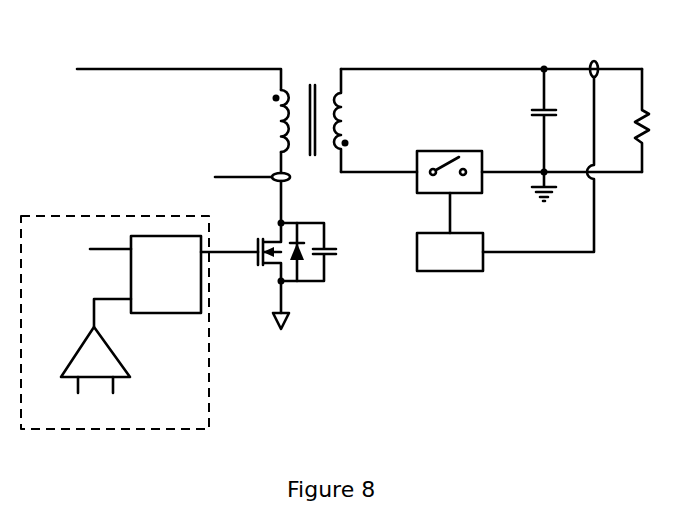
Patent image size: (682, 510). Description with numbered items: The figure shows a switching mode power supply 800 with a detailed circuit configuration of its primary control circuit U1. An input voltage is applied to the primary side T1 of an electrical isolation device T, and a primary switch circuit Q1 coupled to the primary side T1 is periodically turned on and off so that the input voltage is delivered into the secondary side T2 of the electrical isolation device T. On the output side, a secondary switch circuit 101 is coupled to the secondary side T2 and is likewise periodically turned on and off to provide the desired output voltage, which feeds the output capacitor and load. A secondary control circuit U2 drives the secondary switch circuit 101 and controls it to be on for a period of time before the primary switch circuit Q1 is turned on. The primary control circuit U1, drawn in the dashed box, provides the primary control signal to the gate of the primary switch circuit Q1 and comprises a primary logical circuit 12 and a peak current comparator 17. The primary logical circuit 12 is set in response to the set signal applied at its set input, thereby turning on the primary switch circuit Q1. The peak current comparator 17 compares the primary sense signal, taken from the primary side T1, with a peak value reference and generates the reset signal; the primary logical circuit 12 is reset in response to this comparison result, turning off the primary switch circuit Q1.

The switching mode power supply 800 is at (92, 51).
The primary logical circuit 12 is at (166, 276).
The peak current comparator 17 is at (95, 360).
The secondary switch circuit 101 is at (428, 175).
The electrical isolation device T is at (311, 106).
The primary side T1 is at (262, 156).
The secondary side T2 is at (355, 120).
The primary switch circuit Q1 is at (297, 263).
The primary control circuit U1 is at (200, 417).
The secondary control circuit U2 is at (450, 252).